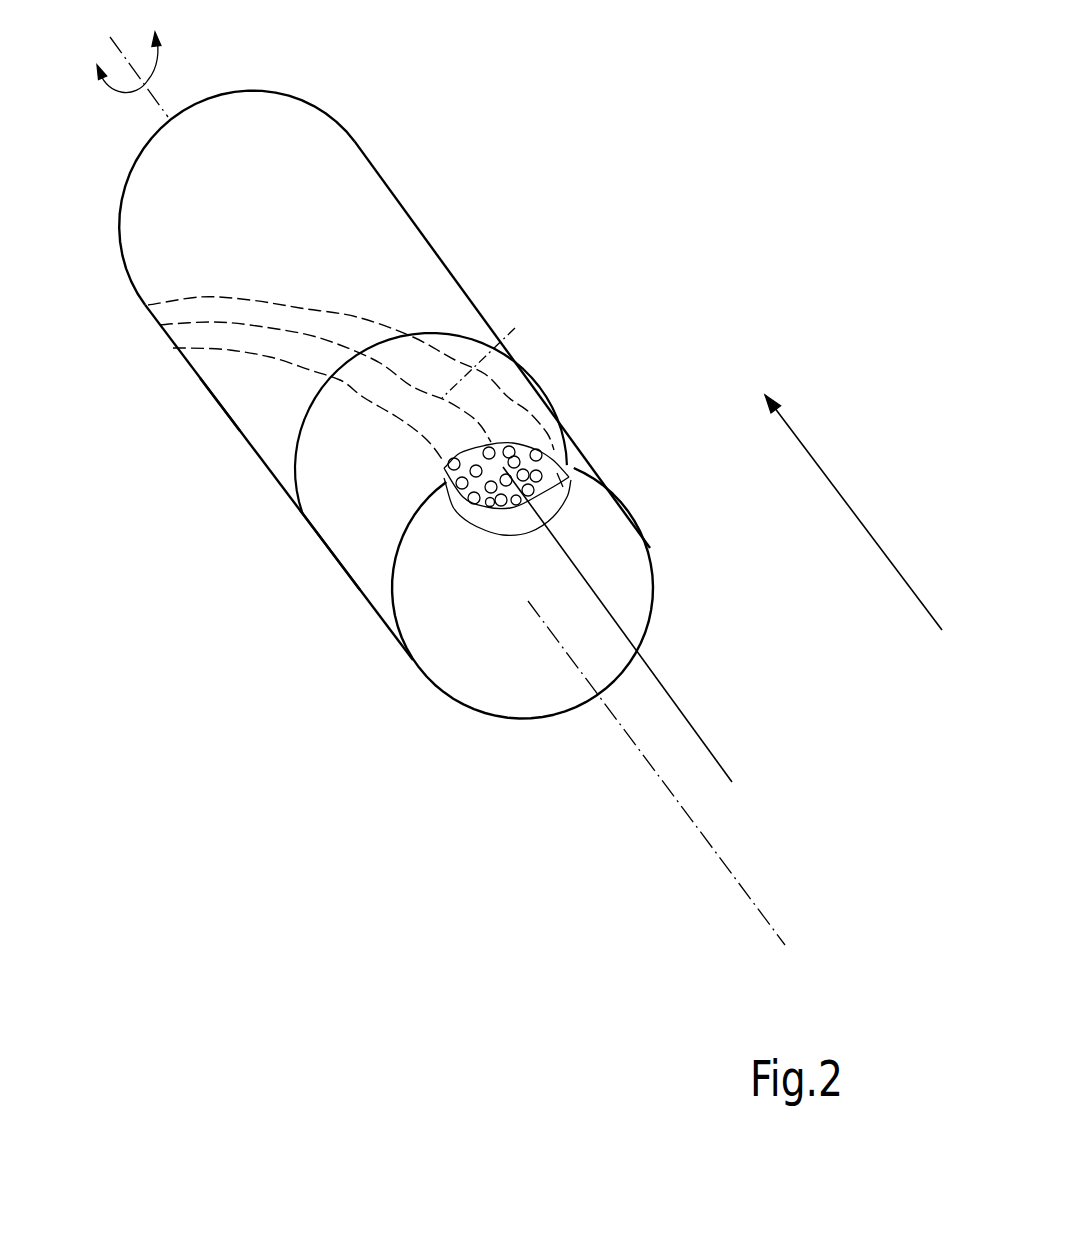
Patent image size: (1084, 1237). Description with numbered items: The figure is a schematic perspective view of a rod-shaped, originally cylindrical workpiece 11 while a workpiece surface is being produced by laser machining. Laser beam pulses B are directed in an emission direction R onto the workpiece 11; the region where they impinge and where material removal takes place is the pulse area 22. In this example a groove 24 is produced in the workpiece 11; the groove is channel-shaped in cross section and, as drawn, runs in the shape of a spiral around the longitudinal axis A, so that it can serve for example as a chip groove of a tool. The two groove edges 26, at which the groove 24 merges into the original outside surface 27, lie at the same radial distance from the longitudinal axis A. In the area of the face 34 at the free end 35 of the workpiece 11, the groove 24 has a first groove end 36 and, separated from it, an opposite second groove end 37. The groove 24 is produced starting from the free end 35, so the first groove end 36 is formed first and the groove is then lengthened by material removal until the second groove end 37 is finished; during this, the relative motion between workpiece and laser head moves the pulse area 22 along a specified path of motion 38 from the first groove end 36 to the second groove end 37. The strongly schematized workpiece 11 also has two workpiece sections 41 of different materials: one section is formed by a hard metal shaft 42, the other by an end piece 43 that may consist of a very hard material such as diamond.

The workpiece 11 is at (393, 210).
The pulse area 22 is at (540, 460).
The groove 24 is at (380, 313).
The groove edges 26 is at (313, 307).
The original outside surface 27 is at (183, 207).
The face 34 is at (462, 652).
The free end 35 is at (413, 657).
The first groove end 36 is at (565, 517).
The second groove end 37 is at (155, 330).
The path of motion 38 is at (515, 328).
The workpiece sections 41 is at (279, 482).
The hard metal shaft 42 is at (225, 418).
The end piece 43 is at (340, 565).
The emission direction R is at (833, 480).
The longitudinal axis A is at (757, 910).
The laser beam pulses B is at (684, 703).